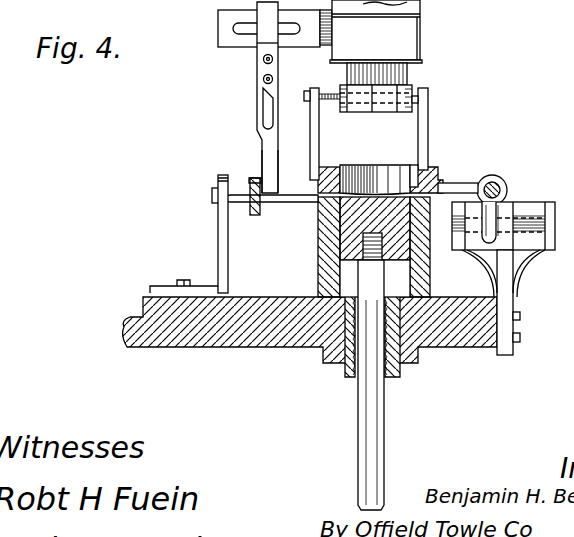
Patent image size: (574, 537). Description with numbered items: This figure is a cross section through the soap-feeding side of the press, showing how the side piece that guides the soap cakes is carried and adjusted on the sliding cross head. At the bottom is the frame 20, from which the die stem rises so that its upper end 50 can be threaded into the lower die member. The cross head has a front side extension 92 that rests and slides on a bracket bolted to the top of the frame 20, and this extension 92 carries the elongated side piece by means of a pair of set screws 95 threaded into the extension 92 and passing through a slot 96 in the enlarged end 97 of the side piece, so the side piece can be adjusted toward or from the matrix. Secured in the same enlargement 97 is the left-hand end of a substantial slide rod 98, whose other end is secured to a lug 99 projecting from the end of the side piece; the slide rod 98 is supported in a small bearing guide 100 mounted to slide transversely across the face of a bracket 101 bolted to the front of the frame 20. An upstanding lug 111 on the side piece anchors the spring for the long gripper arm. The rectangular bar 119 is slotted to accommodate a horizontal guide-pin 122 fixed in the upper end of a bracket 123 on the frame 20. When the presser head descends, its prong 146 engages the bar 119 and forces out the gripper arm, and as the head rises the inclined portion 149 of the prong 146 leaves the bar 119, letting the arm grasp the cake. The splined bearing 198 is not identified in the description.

The frame 20 is at (475, 346).
The upper end of die stem 50 is at (385, 263).
The front side extension of cross head 92 is at (420, 10).
The set screws 95 is at (327, 228).
The slot 96 is at (343, 260).
The enlarged end of side piece 97 is at (393, 92).
The slide rod 98 is at (362, 395).
The lug 99 is at (302, 346).
The bearing guide 100 is at (508, 212).
The bracket 101 is at (520, 277).
The upstanding lug 111 is at (428, 128).
The bar 119 is at (252, 186).
The horizontal guide-pin 122 is at (226, 184).
The bracket 123 is at (220, 247).
The prong 146 is at (266, 148).
The inclined portion of prong 149 is at (266, 143).
The splined bearing 198 is at (367, 167).